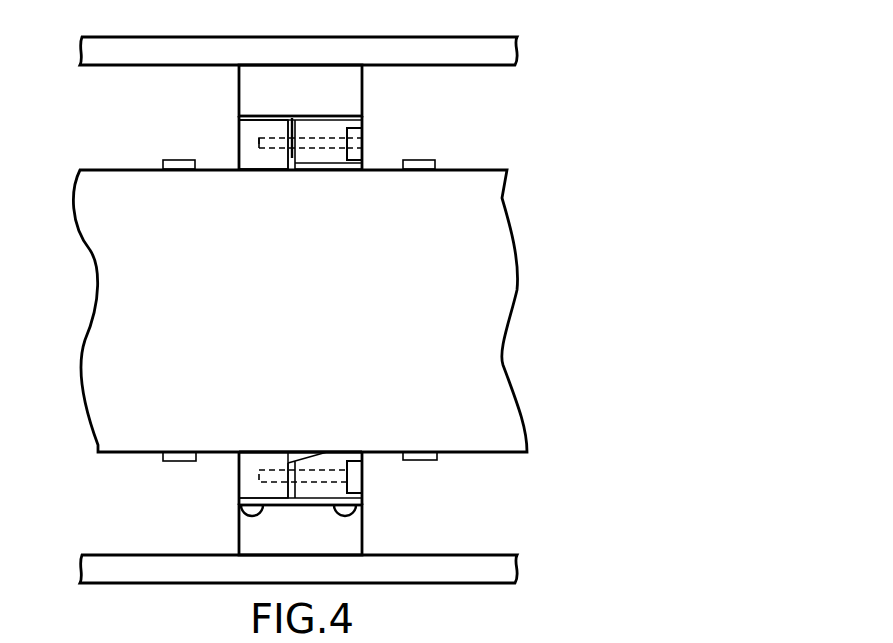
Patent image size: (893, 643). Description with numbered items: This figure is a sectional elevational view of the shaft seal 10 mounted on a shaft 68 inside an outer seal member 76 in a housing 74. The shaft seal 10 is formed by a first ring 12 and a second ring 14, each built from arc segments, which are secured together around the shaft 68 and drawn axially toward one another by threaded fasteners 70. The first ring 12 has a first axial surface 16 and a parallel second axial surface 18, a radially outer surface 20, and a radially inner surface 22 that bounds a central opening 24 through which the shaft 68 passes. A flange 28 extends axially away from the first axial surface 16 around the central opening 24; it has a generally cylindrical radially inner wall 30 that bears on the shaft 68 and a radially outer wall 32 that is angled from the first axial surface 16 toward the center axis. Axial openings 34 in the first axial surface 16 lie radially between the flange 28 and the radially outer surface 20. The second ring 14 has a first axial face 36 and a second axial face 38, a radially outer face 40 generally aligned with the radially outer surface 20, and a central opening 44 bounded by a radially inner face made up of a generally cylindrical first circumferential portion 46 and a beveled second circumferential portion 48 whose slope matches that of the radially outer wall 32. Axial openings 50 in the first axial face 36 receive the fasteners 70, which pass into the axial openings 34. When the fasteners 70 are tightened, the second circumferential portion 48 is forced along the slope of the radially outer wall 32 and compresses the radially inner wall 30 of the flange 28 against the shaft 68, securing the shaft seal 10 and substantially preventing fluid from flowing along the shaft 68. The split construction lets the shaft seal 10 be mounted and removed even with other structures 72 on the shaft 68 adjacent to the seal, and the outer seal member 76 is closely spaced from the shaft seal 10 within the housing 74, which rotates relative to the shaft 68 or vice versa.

The shaft seal 10 is at (215, 515).
The first ring 12 is at (228, 148).
The second ring 14 is at (380, 155).
The first axial surface 16 is at (240, 118).
The second axial surface 18 is at (240, 127).
The radially outer surface 20 is at (243, 512).
The radially inner surface 22 is at (252, 171).
The central opening 24 is at (225, 465).
The flange 28 is at (293, 452).
The radially inner wall 30 is at (295, 170).
The radially outer wall 32 is at (282, 152).
The axial openings 34 is at (257, 143).
The first axial face 36 is at (362, 124).
The second axial face 38 is at (292, 118).
The radially outer face 40 is at (363, 512).
The central opening 44 is at (380, 468).
The first circumferential portion 46 is at (343, 170).
The second circumferential portion 48 is at (298, 158).
The axial openings 50 is at (362, 135).
The shaft 68 is at (107, 332).
The threaded fasteners 70 is at (362, 148).
The other structures 72 is at (437, 167).
The housing 74 is at (135, 52).
The outer seal member 76 is at (332, 77).